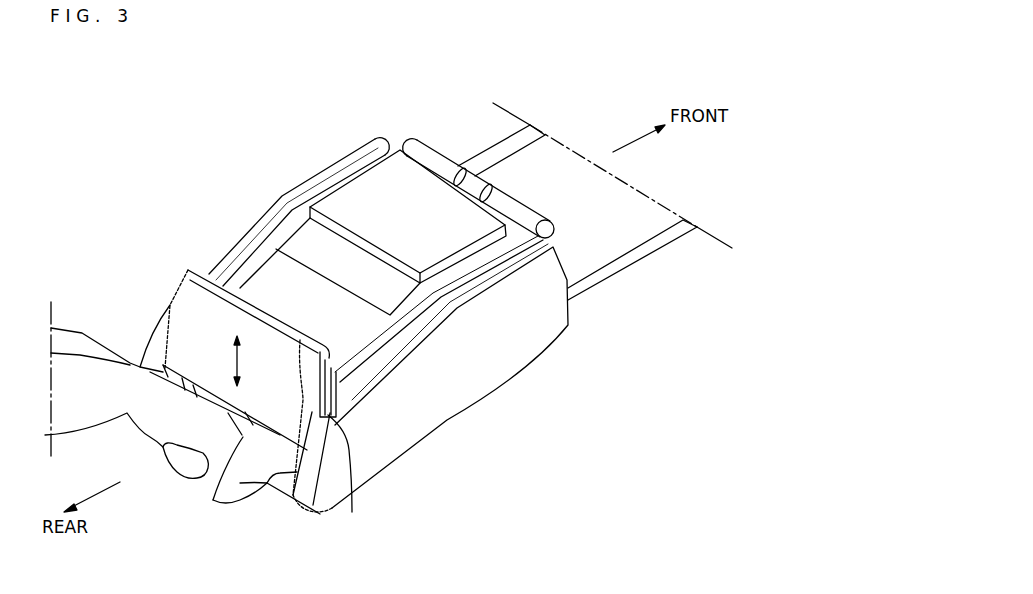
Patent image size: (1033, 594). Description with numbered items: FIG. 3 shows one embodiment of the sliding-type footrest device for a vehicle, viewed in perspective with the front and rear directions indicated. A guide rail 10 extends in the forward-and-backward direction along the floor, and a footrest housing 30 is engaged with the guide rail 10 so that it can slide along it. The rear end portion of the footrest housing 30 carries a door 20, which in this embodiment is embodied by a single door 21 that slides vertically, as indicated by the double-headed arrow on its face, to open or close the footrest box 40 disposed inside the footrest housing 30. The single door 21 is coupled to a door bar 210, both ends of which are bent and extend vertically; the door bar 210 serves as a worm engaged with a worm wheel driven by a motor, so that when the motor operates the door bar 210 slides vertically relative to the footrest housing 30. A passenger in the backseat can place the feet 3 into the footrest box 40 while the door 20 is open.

The guide rail 10 is at (523, 125).
The door 20 is at (191, 349).
The single door 21 is at (185, 305).
The footrest housing 30 is at (450, 410).
The door bar 210 is at (347, 488).
The footrest box 40 is at (171, 434).
The feet 3 is at (238, 484).